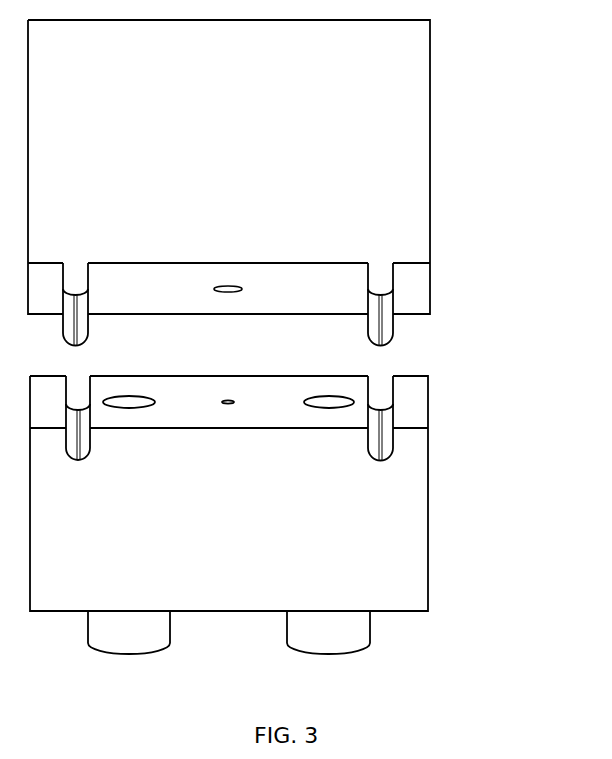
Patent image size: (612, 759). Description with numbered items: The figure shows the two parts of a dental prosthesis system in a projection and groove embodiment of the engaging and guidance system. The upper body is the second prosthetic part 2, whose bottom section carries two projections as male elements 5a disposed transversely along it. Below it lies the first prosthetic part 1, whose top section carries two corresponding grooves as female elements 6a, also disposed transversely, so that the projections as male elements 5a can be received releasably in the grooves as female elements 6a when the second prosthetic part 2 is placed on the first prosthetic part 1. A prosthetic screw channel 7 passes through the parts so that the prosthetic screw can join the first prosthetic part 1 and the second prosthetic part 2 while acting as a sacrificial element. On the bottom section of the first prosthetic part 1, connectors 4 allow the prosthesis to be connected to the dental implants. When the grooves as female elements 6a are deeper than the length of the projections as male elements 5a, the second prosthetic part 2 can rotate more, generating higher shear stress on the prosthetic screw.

The first prosthetic part 1 is at (335, 525).
The second prosthetic part 2 is at (335, 185).
The connector 4 is at (332, 630).
The projection as male element 5a is at (393, 334).
The groove as female element 6a is at (380, 426).
The prosthetic screw channel 7 is at (240, 288).